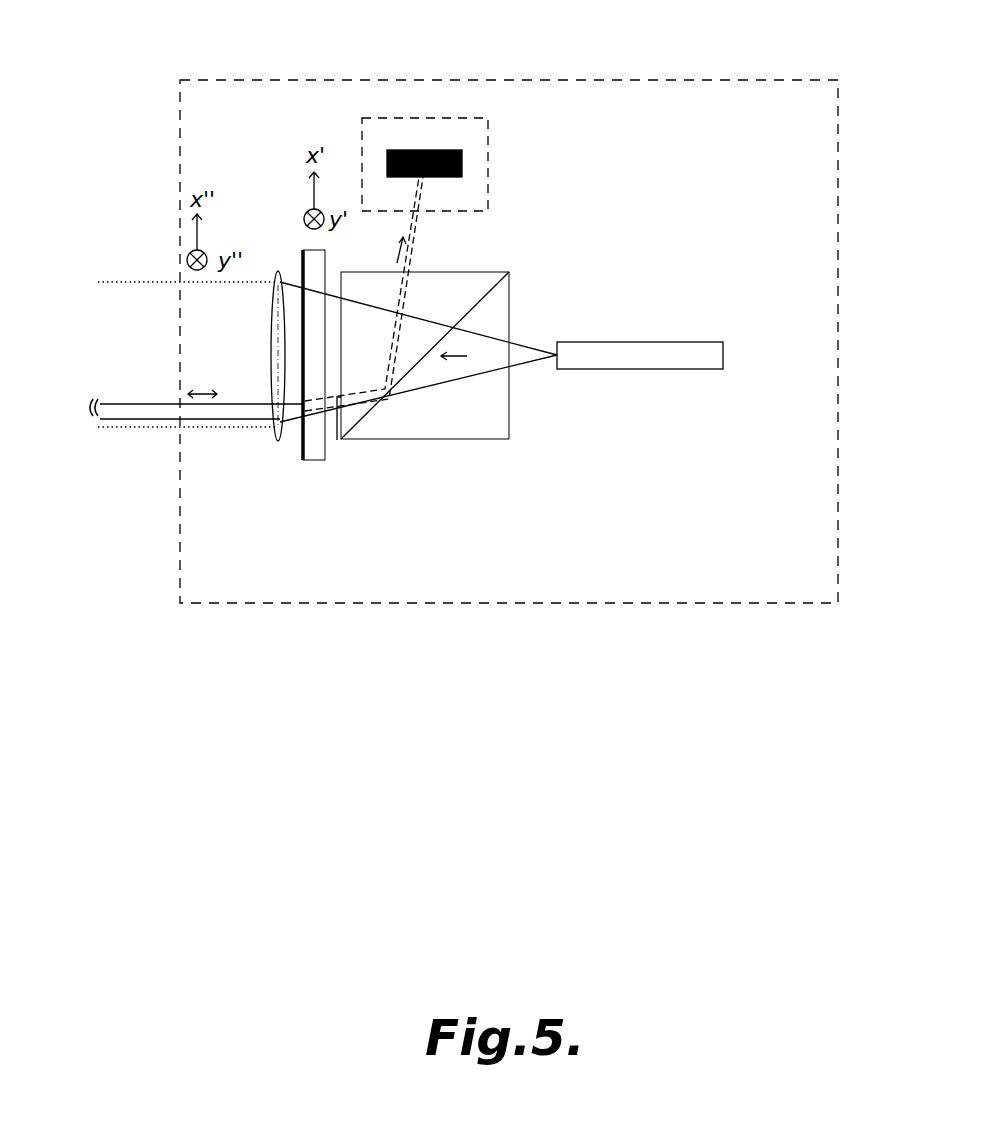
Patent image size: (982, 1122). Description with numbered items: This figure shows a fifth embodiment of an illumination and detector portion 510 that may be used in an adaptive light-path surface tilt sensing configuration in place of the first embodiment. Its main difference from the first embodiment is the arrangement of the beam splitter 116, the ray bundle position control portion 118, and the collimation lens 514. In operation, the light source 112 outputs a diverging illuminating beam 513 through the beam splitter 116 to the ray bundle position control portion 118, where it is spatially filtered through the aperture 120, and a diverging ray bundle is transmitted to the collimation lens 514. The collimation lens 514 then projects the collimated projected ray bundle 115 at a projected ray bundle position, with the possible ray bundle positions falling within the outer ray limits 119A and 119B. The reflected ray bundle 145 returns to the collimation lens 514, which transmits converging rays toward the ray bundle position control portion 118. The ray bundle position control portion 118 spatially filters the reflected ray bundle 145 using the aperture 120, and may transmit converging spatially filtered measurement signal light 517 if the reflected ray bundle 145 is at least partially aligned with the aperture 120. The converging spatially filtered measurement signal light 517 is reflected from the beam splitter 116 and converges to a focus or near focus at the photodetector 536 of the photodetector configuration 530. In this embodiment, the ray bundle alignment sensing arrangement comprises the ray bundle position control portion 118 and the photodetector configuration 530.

The illumination and detector portion 510 is at (838, 80).
The photodetector configuration 530 is at (488, 210).
The photodetector 536 is at (462, 160).
The light source 112 is at (708, 369).
The light beam 513 is at (532, 363).
The beam splitter 116 is at (428, 440).
The converging spatially filtered measurement signal light 517 is at (337, 440).
The ray bundle position control portion 118 is at (318, 460).
The aperture 120 is at (302, 420).
The lens 514 is at (278, 433).
The projected ray bundle 115 is at (158, 403).
The reflected ray bundle 145 is at (364, 294).
The outer ray limit 119A is at (117, 430).
The outer ray limit 119B is at (143, 281).